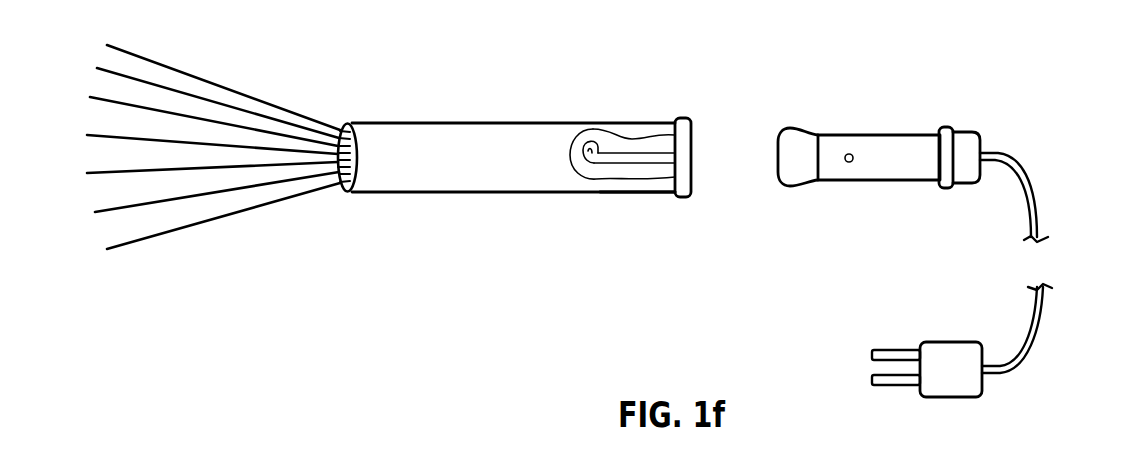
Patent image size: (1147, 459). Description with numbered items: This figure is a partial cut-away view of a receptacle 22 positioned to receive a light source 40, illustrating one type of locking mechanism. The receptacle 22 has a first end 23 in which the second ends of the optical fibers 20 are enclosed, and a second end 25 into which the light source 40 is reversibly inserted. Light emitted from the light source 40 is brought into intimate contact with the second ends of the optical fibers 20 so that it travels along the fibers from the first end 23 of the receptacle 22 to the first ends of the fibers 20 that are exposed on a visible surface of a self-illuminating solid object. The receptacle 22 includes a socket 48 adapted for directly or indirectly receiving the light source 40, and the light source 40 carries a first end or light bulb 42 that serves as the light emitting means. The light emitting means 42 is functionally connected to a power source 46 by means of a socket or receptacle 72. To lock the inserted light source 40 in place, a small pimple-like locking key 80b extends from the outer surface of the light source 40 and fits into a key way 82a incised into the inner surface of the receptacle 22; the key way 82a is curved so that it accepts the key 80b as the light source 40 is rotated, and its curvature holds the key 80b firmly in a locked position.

The optical fibers 20 is at (265, 77).
The receptacle 22 is at (437, 167).
The first end of receptacle 23 is at (349, 193).
The second end of receptacle 25 is at (666, 194).
The socket 48 is at (675, 119).
The key way 82a is at (592, 175).
The light source 40 is at (862, 135).
The light bulb 42 is at (800, 128).
The socket or receptacle 72 is at (948, 127).
The locking key 80b is at (848, 162).
The power source 46 is at (1010, 167).